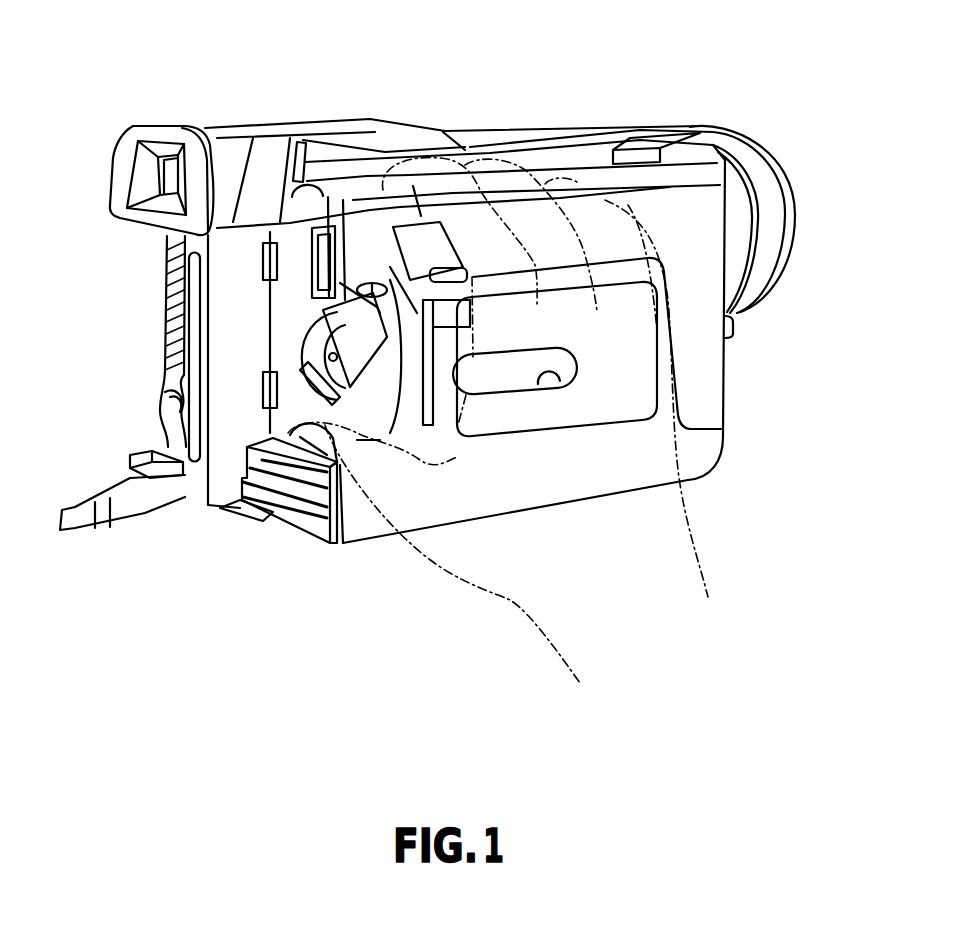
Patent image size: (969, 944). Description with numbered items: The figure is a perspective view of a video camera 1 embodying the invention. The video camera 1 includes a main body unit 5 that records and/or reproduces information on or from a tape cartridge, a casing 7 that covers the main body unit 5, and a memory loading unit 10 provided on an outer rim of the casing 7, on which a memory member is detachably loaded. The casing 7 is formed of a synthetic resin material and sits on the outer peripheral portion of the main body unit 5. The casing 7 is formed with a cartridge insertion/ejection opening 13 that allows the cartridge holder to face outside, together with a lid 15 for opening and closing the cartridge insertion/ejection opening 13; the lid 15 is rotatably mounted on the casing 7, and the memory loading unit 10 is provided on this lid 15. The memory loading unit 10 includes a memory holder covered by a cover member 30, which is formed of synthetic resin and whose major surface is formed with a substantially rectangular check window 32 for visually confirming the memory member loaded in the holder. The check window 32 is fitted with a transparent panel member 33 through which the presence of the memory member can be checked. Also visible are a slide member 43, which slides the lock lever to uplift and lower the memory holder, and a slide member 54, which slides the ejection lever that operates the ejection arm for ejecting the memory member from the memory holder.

The video camera 1 is at (273, 535).
The main body unit 5 is at (193, 487).
The casing 7 is at (270, 150).
The memory loading unit 10 is at (436, 438).
The cartridge insertion/ejection opening 13 is at (684, 340).
The lid 15 is at (457, 507).
The cover member 30 is at (613, 400).
The check window 32 is at (558, 385).
The transparent panel member 33 is at (507, 377).
The slide member 43 is at (376, 283).
The slide member 54 is at (433, 320).